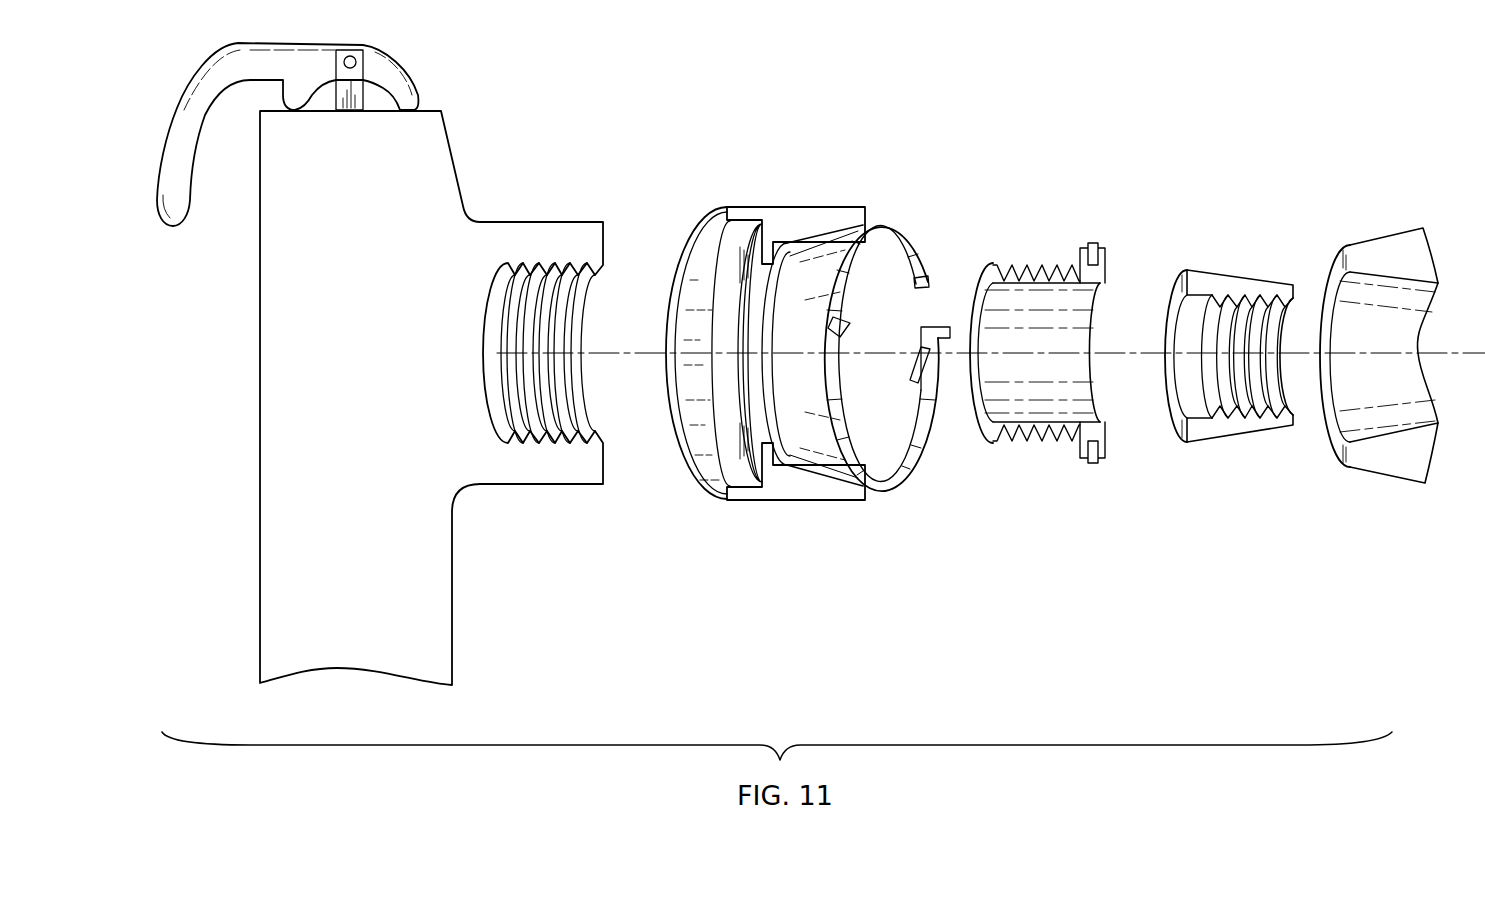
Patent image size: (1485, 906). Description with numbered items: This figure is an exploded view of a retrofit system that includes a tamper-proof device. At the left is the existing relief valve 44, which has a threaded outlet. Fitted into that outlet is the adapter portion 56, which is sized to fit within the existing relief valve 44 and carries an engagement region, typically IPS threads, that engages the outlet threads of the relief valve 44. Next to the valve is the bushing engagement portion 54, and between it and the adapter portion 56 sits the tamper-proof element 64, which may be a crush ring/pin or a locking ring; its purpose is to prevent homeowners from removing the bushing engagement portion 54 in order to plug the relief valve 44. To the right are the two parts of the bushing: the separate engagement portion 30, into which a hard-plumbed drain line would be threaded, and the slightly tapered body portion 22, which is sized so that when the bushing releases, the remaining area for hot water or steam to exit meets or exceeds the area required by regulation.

The relief valve 44 is at (497, 222).
The bushing engagement portion 54 is at (780, 208).
The tamper-proof element 64 is at (905, 225).
The adapter portion 56 is at (1107, 258).
The engagement portion 30 is at (1236, 272).
The body portion 22 is at (1370, 236).